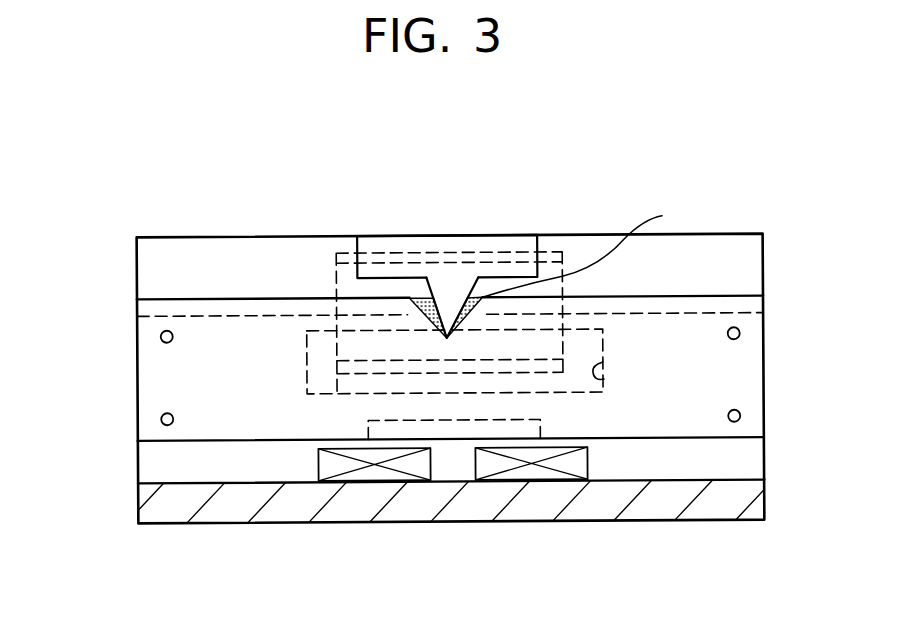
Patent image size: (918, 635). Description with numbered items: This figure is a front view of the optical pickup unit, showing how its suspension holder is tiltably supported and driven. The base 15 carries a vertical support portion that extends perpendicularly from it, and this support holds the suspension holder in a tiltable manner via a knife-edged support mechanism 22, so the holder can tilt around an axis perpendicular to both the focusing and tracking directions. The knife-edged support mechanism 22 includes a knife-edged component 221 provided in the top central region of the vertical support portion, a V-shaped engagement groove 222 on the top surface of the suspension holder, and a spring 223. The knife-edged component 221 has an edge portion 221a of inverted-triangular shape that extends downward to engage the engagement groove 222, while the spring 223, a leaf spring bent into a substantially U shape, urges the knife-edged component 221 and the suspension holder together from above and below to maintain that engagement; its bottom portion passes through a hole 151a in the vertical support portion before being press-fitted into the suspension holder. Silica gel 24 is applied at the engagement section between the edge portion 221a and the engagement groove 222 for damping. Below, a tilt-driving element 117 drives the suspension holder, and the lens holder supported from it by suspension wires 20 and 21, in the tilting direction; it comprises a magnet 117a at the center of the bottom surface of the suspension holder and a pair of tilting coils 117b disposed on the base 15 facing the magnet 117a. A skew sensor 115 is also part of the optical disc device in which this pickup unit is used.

The skew sensor 115 is at (745, 265).
The suspension wire 21 is at (741, 333).
The suspension wire 20 is at (161, 420).
The base 15 is at (743, 502).
The hole 151a is at (605, 378).
The tilt-driving element 117 is at (521, 513).
The magnet 117a is at (455, 421).
The tilting coils 117b is at (377, 463).
The knife-edged support mechanism 22 is at (368, 260).
The knife-edged component 221 is at (397, 243).
The edge portion 221a is at (445, 292).
The V-shaped engagement groove 222 is at (417, 318).
The spring 223 is at (432, 260).
The silica gel 24 is at (488, 238).